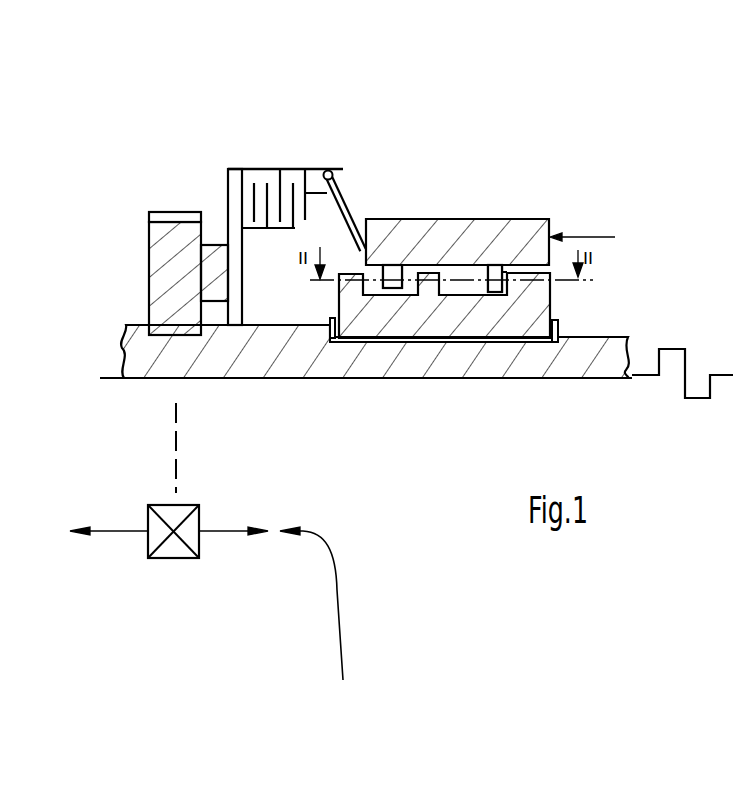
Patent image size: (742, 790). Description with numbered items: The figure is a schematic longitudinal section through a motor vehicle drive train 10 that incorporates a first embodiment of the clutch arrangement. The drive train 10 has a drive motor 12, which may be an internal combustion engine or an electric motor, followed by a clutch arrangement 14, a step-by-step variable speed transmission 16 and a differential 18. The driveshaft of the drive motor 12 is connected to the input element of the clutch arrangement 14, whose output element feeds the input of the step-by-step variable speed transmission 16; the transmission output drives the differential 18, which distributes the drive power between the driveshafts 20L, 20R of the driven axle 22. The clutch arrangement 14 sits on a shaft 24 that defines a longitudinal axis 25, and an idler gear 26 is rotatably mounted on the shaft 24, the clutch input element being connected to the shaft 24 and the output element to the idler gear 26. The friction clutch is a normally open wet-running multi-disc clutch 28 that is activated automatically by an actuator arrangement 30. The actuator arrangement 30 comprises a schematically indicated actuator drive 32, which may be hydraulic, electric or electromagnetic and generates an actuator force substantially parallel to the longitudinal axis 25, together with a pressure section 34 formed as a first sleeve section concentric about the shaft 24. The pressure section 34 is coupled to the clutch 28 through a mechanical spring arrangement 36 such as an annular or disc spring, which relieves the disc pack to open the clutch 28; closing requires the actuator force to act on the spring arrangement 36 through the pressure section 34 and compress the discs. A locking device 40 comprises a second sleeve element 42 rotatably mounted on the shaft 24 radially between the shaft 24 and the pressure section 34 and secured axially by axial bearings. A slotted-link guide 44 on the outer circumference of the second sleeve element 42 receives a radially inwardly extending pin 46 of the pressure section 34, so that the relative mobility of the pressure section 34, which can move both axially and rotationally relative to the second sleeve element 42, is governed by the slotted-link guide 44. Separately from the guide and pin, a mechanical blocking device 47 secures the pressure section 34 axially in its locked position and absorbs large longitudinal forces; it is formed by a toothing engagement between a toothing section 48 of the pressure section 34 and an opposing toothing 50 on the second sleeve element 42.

The drive train 10 is at (585, 173).
The drive motor 12 is at (668, 347).
The clutch arrangement 14 is at (443, 170).
The step-by-step variable speed transmission 16 is at (161, 178).
The differential 18 is at (173, 558).
The driveshaft 20L is at (128, 533).
The driveshaft 20R is at (230, 533).
The driven axle 22 is at (318, 615).
The shaft 24 is at (142, 356).
The longitudinal axis 25 is at (578, 378).
The idler gear 26 is at (163, 283).
The wet-running multi-disc clutch 28 is at (263, 190).
The actuator arrangement 30 is at (520, 182).
The actuator drive 32 is at (588, 232).
The pressure section 34 is at (518, 237).
The mechanical spring arrangement 36 is at (307, 207).
The locking device 40 is at (480, 196).
The second sleeve element 42 is at (432, 317).
The slotted-link guide 44 is at (458, 283).
The pin 46 is at (487, 280).
The mechanical blocking device 47 is at (404, 326).
The toothing section 48 is at (399, 285).
The opposing toothing 50 is at (343, 278).